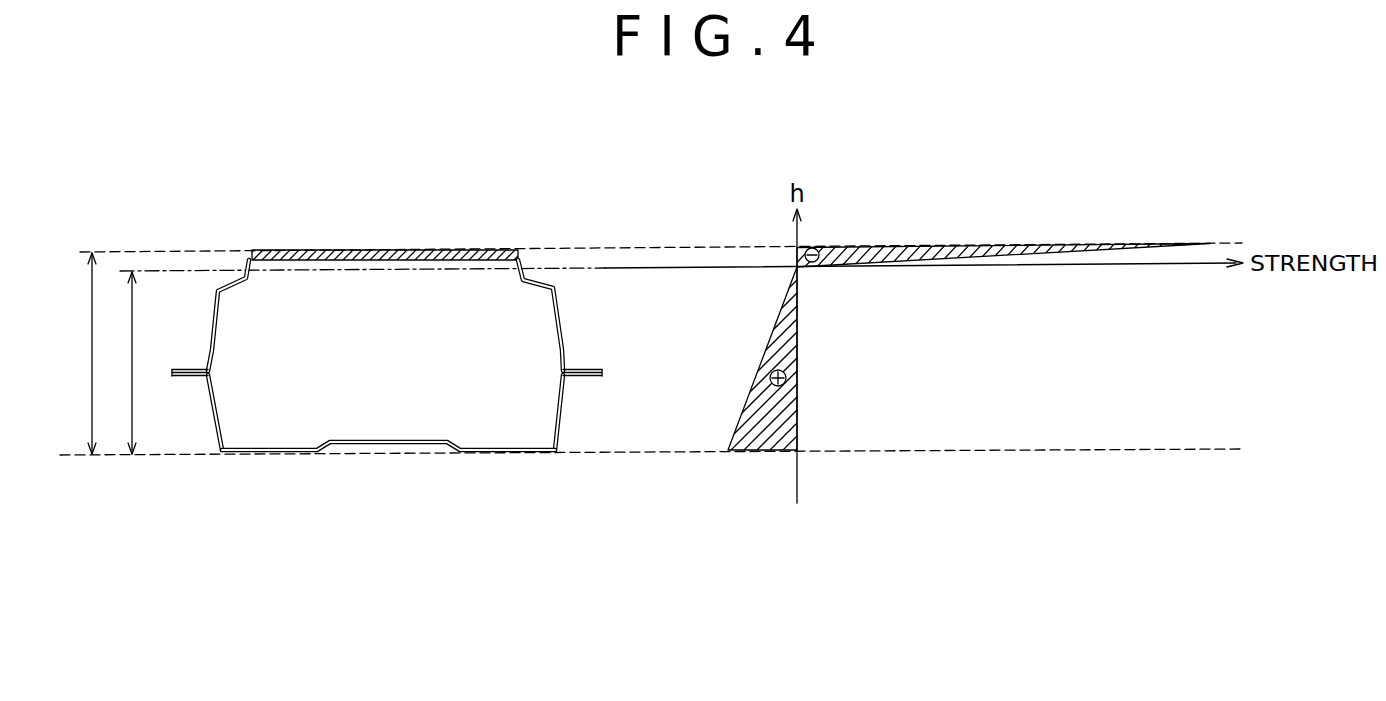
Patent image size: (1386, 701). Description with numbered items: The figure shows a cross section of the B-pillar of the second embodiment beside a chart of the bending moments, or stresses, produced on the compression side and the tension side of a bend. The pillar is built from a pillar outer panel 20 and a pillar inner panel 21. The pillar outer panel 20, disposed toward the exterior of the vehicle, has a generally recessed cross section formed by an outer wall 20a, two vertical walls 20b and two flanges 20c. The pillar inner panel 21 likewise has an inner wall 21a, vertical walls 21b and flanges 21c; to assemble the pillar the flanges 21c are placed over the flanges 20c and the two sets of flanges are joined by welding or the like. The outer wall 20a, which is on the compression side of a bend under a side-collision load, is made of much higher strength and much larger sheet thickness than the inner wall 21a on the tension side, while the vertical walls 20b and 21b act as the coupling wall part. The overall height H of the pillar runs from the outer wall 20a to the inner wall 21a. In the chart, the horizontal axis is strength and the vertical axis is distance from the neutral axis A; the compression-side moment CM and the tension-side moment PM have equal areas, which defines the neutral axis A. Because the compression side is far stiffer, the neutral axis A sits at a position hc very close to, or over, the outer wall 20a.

The pillar outer panel 20 is at (421, 285).
The outer wall 20a is at (372, 249).
The vertical walls 20b is at (214, 302).
The flanges 20c is at (187, 370).
The pillar inner panel 21 is at (422, 449).
The inner wall 21a is at (488, 453).
The vertical walls 21b is at (216, 410).
The flanges 21c is at (187, 378).
The neutral axis A is at (203, 272).
The overall height H is at (82, 353).
The position of neutral axis hc is at (118, 363).
The compression-side moment CM is at (868, 253).
The tension-side moment PM is at (765, 432).